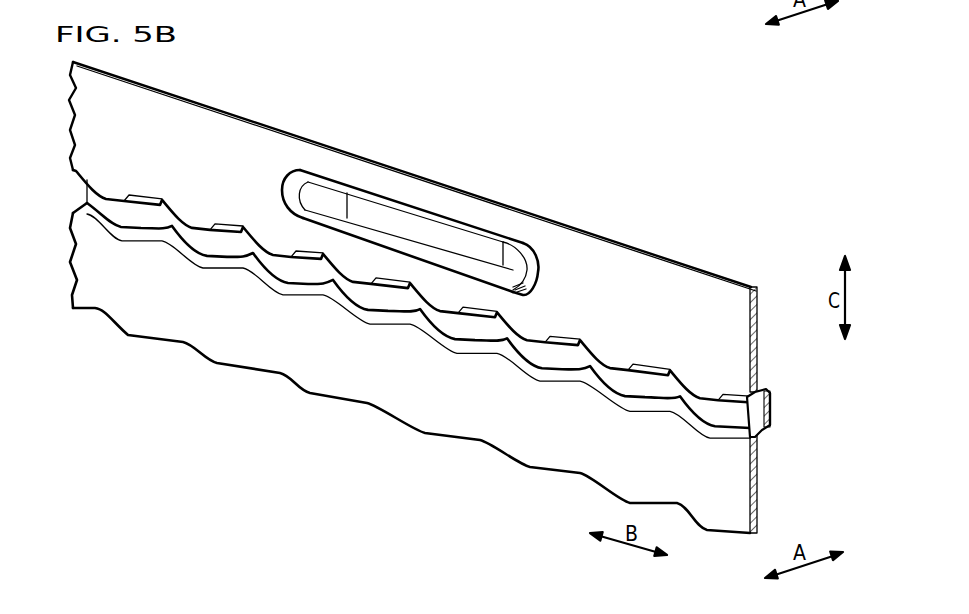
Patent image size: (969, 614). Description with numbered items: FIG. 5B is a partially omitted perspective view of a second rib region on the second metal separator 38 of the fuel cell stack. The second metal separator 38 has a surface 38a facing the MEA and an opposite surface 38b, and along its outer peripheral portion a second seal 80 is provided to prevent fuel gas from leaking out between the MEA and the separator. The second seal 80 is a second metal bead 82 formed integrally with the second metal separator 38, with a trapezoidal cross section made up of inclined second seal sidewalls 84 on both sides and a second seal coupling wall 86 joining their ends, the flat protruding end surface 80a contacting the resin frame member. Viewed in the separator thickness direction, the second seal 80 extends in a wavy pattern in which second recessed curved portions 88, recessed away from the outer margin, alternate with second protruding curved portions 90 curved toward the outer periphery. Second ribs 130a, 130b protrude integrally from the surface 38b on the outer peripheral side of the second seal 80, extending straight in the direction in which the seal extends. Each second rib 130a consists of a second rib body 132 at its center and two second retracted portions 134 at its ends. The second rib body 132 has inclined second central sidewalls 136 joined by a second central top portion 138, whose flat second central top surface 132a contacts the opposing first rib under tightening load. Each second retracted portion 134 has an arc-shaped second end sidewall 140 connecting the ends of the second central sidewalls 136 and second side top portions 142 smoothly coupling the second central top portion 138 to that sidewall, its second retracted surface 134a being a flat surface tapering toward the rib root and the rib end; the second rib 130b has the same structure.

The second metal separator 38 is at (257, 361).
The surface facing the MEA 38a is at (733, 302).
The surface of second metal separator 38b is at (698, 297).
The second seal 80 is at (448, 351).
The second metal bead 82 is at (448, 351).
The protruding end surface 80a is at (772, 408).
The second seal sidewall 84 is at (799, 435).
The second seal coupling wall 86 is at (775, 412).
The second recessed curved portion 88 is at (633, 413).
The second protruding curved portion 90 is at (585, 379).
The second rib 130a is at (410, 309).
The second rib 130b is at (410, 309).
The second rib body 132 is at (405, 255).
The second central top surface 132a is at (416, 222).
The second retracted portion 134 is at (294, 214).
The second retracted surface 134a is at (323, 192).
The second central sidewall 136 is at (475, 268).
The second central top portion 138 is at (387, 214).
The second end sidewall 140 is at (308, 186).
The second side top portion 142 is at (287, 198).